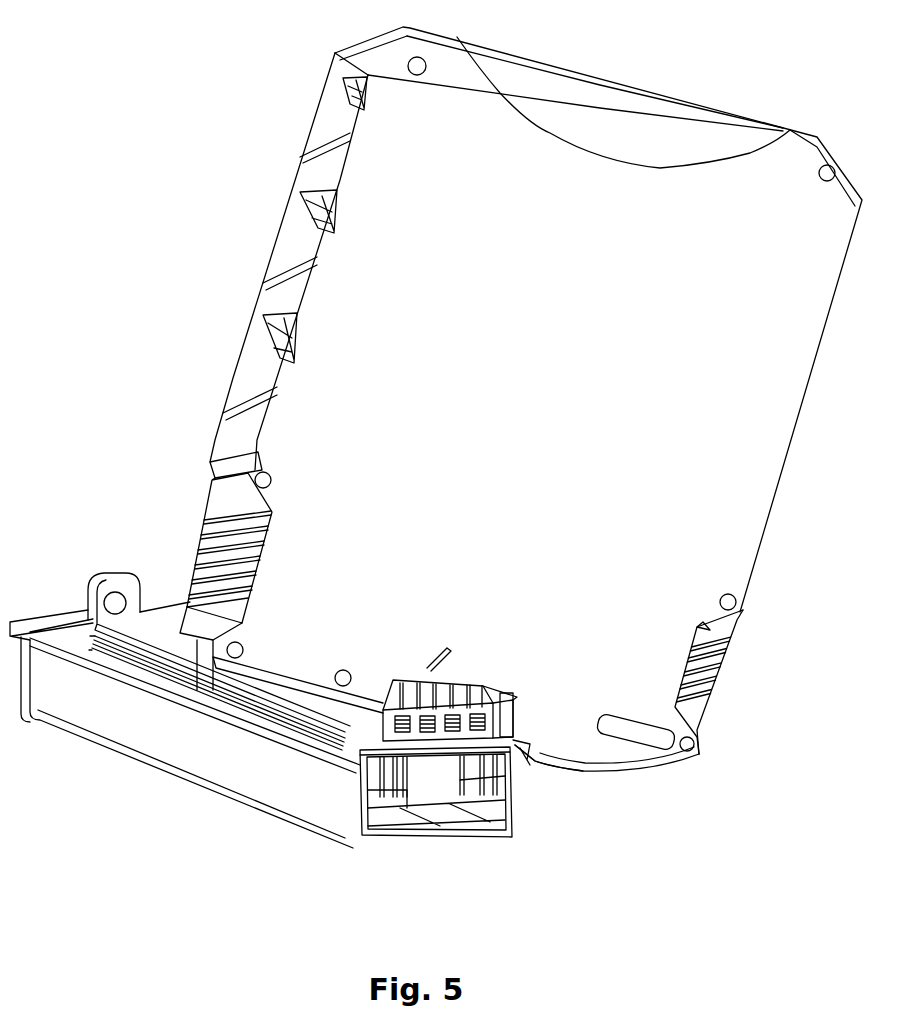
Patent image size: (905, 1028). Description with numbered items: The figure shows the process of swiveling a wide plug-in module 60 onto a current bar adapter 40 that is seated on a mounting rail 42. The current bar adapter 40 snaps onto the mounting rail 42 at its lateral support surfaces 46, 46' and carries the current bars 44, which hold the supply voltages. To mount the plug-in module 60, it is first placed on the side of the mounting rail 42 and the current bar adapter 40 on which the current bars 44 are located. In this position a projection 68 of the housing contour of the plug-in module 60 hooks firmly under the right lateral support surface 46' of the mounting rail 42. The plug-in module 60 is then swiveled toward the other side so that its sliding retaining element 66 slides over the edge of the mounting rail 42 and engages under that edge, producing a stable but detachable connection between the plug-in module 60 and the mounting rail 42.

The current bar adapter 40 is at (423, 727).
The mounting rail 42 is at (160, 732).
The current bars 44 is at (473, 763).
The lateral support surface 46 is at (222, 731).
The lateral support surface 46' is at (530, 788).
The plug-in module 60 is at (720, 423).
The sliding retaining element 66 is at (283, 700).
The projection 68 is at (530, 743).